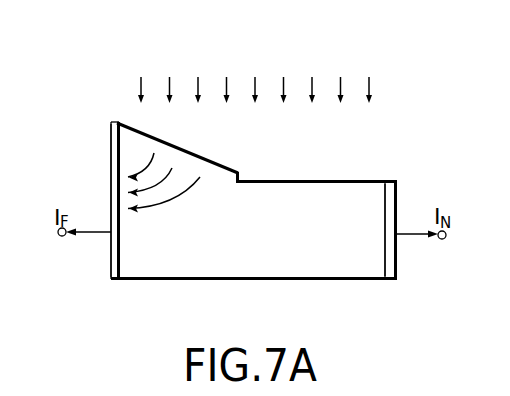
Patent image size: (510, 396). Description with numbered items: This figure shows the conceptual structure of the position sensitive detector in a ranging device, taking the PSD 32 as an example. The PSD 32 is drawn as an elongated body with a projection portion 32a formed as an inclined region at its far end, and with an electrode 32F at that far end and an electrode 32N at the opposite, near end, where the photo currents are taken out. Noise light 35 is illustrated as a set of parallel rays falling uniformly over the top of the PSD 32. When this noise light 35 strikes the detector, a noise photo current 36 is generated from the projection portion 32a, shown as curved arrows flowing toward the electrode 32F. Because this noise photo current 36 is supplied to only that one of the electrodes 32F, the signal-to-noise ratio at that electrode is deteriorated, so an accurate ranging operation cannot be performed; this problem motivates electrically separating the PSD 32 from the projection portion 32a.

The PSD 32 is at (360, 181).
The projection portion 32a is at (243, 172).
The electrode 32F is at (117, 280).
The electrode 32N is at (391, 282).
The noise light 35 is at (382, 82).
The noise photo current 36 is at (170, 223).